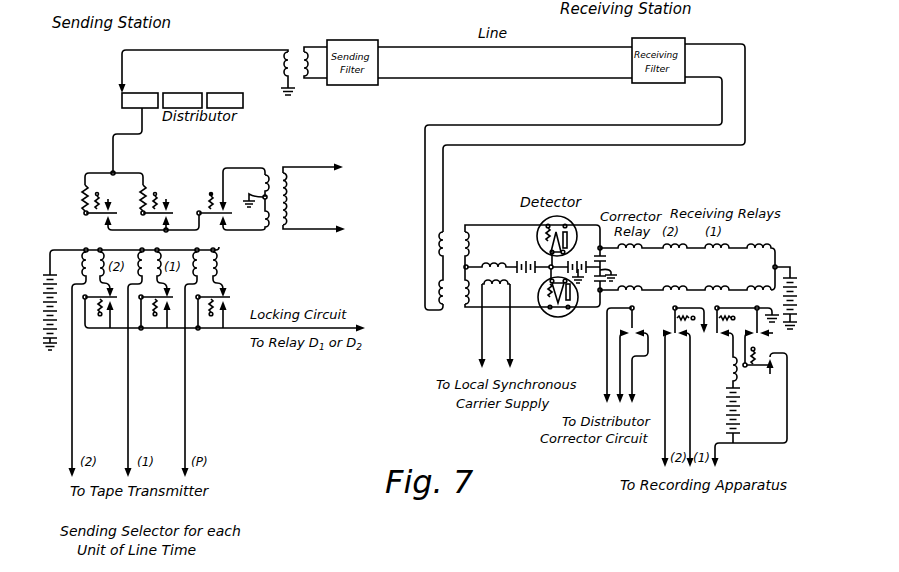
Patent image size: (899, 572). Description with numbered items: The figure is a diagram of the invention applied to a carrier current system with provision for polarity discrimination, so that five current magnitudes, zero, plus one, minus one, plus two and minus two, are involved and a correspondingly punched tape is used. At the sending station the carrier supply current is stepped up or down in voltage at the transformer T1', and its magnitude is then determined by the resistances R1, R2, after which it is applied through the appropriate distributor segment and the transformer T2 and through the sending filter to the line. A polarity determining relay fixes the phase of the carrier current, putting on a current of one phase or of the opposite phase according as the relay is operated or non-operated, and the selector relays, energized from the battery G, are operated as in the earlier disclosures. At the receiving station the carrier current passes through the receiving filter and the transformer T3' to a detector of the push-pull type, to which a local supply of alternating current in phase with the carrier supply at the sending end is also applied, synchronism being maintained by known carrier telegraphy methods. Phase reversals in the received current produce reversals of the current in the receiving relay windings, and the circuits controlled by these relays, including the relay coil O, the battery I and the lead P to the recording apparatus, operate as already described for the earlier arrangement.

The transformer T2 is at (304, 60).
The transformer T1' is at (285, 188).
The transformer T3' is at (454, 253).
The resistance R1 is at (156, 208).
The resistance R2 is at (124, 207).
The battery G is at (116, 298).
The relay coil O is at (721, 359).
The battery I is at (739, 415).
The lead P to recording apparatus P is at (750, 410).